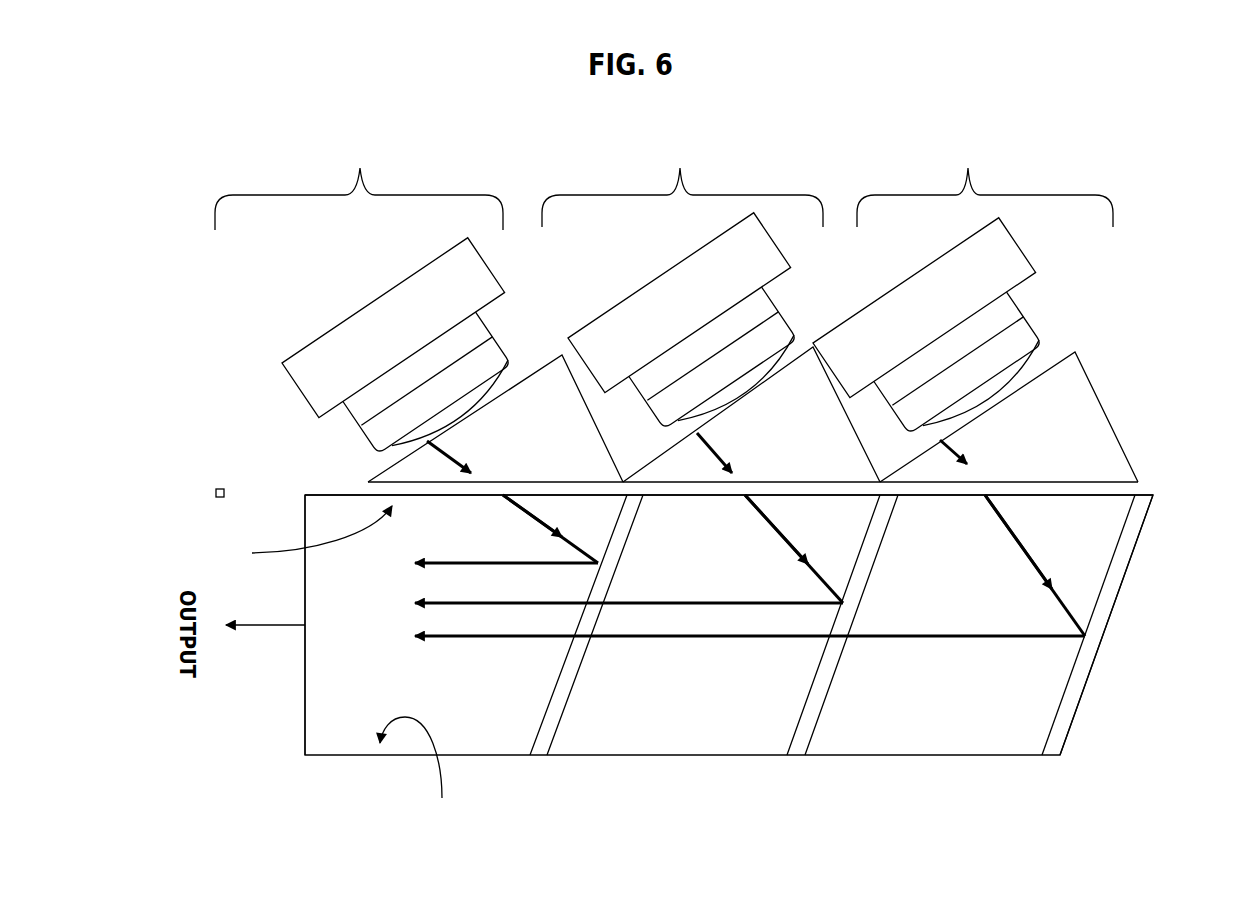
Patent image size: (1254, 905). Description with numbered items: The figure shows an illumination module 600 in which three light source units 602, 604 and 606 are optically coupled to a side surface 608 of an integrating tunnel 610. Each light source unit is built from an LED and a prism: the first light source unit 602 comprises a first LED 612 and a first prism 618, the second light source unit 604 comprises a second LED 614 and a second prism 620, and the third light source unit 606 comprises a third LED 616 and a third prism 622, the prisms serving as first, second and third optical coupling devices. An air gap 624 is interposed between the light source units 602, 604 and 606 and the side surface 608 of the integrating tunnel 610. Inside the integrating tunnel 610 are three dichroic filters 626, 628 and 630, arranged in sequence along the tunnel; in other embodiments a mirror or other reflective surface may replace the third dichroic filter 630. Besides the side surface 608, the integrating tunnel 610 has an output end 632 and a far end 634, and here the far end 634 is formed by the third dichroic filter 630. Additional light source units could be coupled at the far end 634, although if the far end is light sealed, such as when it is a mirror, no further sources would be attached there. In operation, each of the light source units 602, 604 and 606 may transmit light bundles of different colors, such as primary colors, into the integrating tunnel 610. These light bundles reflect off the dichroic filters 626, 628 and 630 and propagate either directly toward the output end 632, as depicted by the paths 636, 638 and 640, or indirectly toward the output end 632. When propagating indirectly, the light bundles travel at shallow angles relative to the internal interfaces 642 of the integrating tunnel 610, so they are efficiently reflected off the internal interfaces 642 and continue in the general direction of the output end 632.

The illumination module 600 is at (642, 117).
The light source unit 602 is at (359, 174).
The light source unit 604 is at (682, 177).
The light source unit 606 is at (985, 179).
The side surface 608 is at (306, 483).
The integrating tunnel 610 is at (706, 728).
The LED 612 is at (472, 278).
The LED 614 is at (760, 260).
The LED 616 is at (1002, 262).
The prism 618 is at (495, 418).
The prism 620 is at (751, 414).
The prism 622 is at (1009, 417).
The air gap 624 is at (1170, 469).
The dichroic filter 626 is at (550, 717).
The dichroic filter 628 is at (810, 715).
The dichroic filter 630 is at (1063, 715).
The output end 632 is at (287, 718).
The far end 634 is at (1106, 665).
The light bundle path 636 is at (532, 565).
The light bundle path 638 is at (540, 603).
The light bundle path 640 is at (542, 636).
The internal interfaces 642 is at (336, 665).